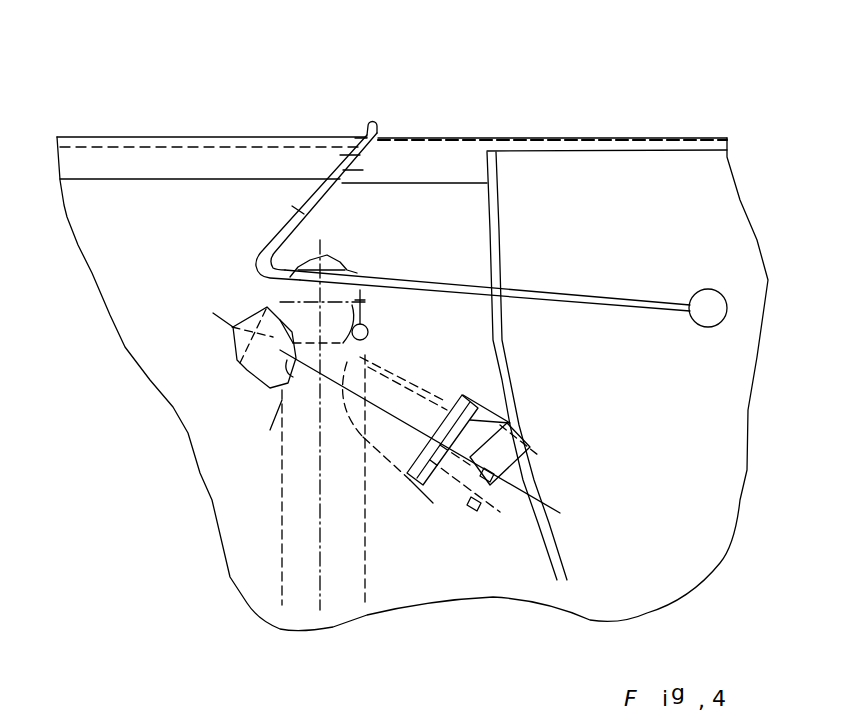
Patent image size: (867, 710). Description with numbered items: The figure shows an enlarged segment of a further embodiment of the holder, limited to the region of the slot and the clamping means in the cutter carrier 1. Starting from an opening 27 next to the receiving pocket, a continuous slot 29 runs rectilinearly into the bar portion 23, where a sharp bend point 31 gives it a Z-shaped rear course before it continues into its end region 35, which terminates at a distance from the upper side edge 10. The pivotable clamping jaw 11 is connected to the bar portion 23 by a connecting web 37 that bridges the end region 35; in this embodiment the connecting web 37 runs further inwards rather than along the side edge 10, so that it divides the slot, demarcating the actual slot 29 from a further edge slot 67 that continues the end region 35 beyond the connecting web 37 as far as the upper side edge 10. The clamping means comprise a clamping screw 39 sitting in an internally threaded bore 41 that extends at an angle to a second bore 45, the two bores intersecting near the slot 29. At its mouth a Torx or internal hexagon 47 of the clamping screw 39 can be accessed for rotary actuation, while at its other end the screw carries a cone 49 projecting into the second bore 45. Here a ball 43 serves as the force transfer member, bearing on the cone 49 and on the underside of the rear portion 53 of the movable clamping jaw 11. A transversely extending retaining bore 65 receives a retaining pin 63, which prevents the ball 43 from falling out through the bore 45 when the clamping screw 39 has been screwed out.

The cutter carrier 1 is at (75, 264).
The upper side edge 10 is at (120, 137).
The pivotable clamping jaw 11 is at (622, 210).
The bar portion 23 is at (180, 210).
The opening 27 is at (706, 290).
The slot 29 is at (425, 262).
The sharp bend point 31 is at (258, 264).
The end region of the slot 35 is at (297, 210).
The connecting web 37 is at (378, 127).
The clamping screw 39 is at (373, 445).
The bore 41 is at (486, 530).
The ball 43 is at (282, 298).
The second bore 45 is at (293, 530).
The internal hexagon 47 is at (497, 507).
The cone 49 is at (282, 400).
The rear portion of the movable clamping jaw 53 is at (388, 240).
The retaining pin 63 is at (369, 330).
The retaining bore 65 is at (370, 322).
The edge slot 67 is at (353, 137).